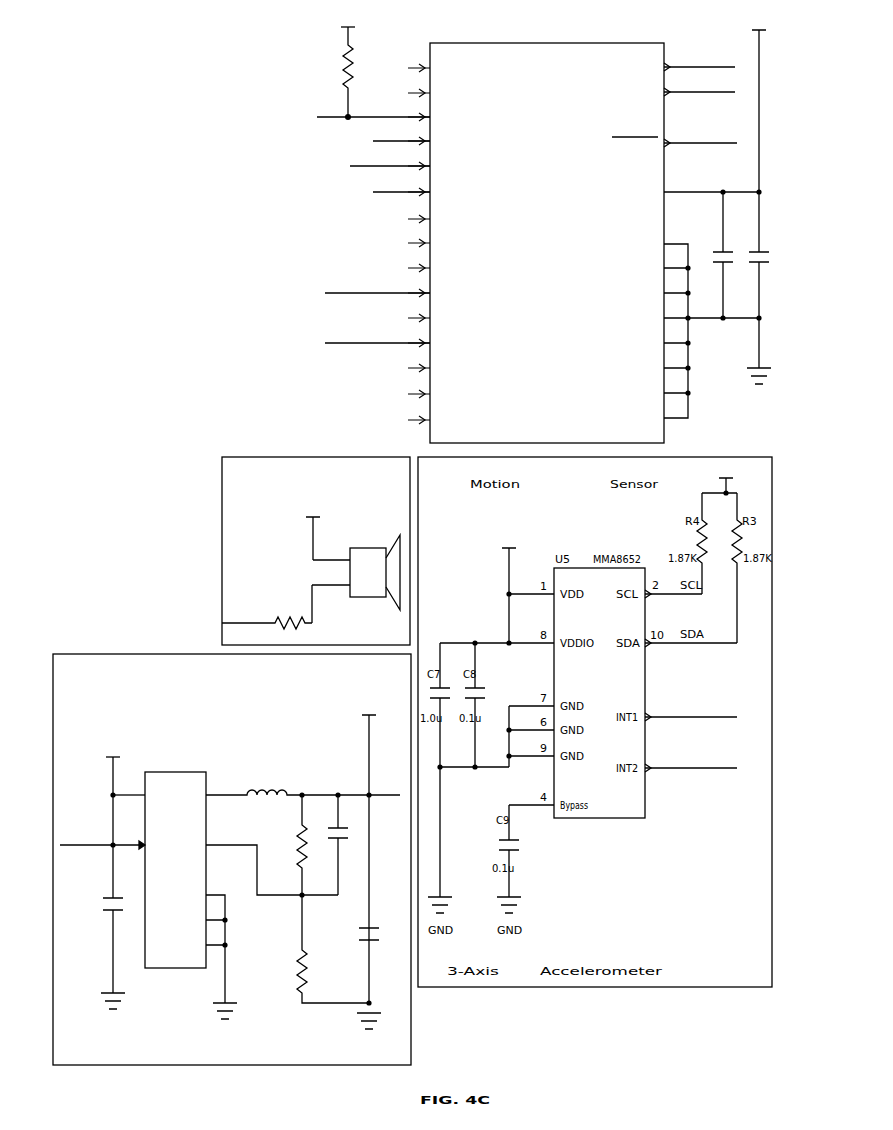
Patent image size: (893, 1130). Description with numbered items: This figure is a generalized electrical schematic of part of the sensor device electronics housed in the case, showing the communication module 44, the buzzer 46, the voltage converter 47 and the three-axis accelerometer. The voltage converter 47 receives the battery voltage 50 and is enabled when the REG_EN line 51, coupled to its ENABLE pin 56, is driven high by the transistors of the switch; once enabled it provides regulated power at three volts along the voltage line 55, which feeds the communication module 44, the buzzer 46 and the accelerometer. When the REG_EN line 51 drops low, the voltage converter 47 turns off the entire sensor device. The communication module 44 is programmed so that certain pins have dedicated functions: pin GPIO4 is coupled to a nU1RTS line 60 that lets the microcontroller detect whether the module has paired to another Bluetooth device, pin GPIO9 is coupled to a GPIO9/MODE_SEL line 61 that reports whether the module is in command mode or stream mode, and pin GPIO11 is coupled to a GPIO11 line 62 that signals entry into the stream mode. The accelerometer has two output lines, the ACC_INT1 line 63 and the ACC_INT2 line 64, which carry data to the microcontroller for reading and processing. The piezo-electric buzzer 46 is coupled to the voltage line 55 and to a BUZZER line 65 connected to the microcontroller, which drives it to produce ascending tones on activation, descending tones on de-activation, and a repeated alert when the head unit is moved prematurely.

The communication module 44 is at (288, 178).
The buzzer 46 is at (222, 463).
The voltage converter 47 is at (80, 655).
The battery voltage 50 is at (100, 752).
The REG_EN line 51 is at (86, 849).
The voltage line 55 is at (332, 15).
The ENABLE pin 56 is at (178, 850).
The nU1RTS line 60 is at (358, 168).
The GPIO9/MODE_SEL line 61 is at (340, 294).
The GPIO11 line 62 is at (345, 346).
The ACC_INT1 line 63 is at (720, 719).
The ACC_INT2 line 64 is at (720, 770).
The BUZZER line 65 is at (238, 632).